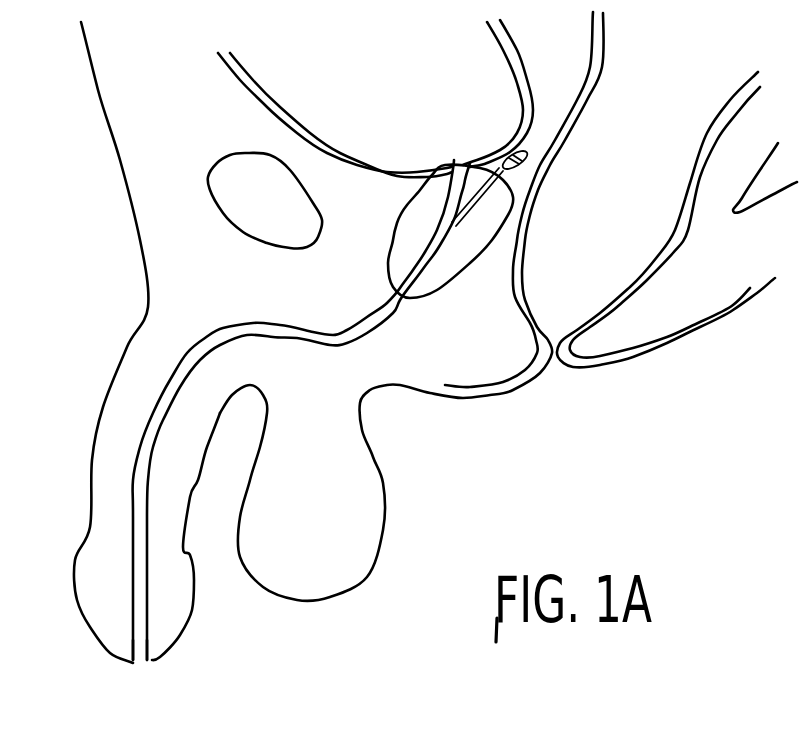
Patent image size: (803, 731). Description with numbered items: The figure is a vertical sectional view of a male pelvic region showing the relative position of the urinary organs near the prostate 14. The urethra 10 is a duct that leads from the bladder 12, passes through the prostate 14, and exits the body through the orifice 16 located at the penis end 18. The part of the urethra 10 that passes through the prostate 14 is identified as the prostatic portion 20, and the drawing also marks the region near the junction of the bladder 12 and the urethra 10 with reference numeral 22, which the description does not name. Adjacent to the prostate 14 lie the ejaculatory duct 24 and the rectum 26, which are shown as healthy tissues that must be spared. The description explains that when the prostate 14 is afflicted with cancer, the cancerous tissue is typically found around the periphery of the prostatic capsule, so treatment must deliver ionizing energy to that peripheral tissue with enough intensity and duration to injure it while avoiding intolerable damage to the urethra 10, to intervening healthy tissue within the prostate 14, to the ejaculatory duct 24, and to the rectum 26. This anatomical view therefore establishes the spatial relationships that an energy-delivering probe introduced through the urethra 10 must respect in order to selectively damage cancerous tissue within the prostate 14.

The urethra 10 is at (187, 350).
The bladder 12 is at (275, 93).
The prostate 14 is at (458, 242).
The orifice 16 is at (143, 658).
The penis end 18 is at (90, 628).
The prostatic portion 20 is at (440, 225).
The bladder neck 22 is at (455, 165).
The ejaculatory duct 24 is at (505, 210).
The rectum 26 is at (570, 290).